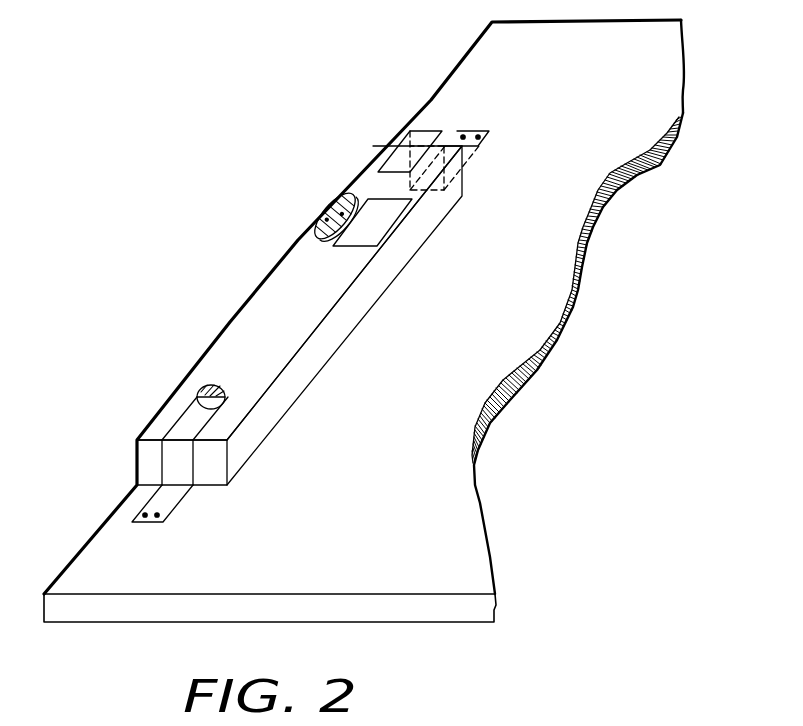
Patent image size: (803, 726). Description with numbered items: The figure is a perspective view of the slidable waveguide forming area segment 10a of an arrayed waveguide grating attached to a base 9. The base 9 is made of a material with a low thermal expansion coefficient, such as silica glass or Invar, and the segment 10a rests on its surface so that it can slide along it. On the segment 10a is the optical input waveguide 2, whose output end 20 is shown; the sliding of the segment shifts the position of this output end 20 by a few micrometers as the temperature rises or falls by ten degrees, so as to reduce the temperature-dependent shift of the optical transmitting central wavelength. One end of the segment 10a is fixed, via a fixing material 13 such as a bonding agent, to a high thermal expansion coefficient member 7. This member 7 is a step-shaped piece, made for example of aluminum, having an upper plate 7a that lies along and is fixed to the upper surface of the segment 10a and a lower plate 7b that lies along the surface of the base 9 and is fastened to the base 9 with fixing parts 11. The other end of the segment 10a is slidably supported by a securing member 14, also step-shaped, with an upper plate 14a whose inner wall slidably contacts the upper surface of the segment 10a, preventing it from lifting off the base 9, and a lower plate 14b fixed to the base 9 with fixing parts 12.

The optical input waveguide 2 is at (327, 208).
The high thermal expansion coefficient member 7 is at (160, 460).
The upper plate 7a is at (176, 418).
The lower plate 7b is at (155, 503).
The base 9 is at (456, 516).
The waveguide forming area segment 10a is at (280, 357).
The fixing parts 11 is at (160, 514).
The fixing parts 12 is at (480, 130).
The fixing material 13 is at (203, 390).
The securing member 14 is at (440, 125).
The upper plate 14a is at (400, 155).
The lower plate 14b is at (473, 150).
The output end 20 is at (343, 199).